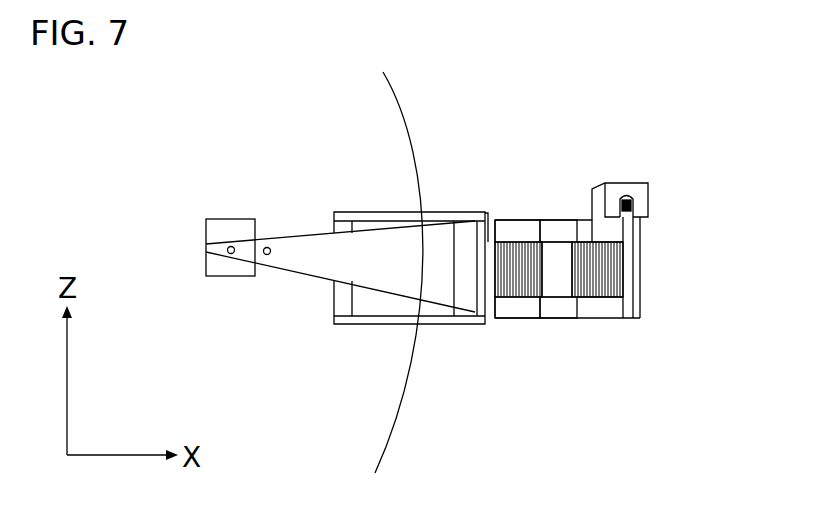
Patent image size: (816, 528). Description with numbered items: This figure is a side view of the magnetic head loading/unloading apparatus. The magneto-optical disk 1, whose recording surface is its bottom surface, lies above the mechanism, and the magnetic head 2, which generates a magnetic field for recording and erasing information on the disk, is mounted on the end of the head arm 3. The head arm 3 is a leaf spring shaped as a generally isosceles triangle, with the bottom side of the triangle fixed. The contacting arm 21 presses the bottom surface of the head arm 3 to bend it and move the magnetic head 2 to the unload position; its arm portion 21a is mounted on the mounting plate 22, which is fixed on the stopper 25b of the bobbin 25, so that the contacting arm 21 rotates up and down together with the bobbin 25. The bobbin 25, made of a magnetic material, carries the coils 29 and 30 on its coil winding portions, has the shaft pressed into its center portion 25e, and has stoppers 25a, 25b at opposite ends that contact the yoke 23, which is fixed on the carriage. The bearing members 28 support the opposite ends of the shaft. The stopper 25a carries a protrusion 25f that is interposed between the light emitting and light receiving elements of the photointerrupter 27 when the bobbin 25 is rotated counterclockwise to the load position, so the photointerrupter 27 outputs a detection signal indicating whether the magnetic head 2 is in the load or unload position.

The magneto-optical disk 1 is at (392, 128).
The magnetic head 2 is at (229, 221).
The head arm 3 is at (313, 246).
The contacting arm 21 is at (448, 326).
The arm portion 21a is at (338, 300).
The mounting plate 22 is at (478, 233).
The yoke 23 is at (518, 231).
The bobbin 25 is at (511, 297).
The stopper 25a is at (627, 273).
The stopper 25b is at (491, 243).
The center portion 25e is at (598, 292).
The protrusion 25f is at (640, 200).
The photointerrupter 27 is at (628, 185).
The bearing member 28 is at (555, 230).
The coil 29 is at (518, 285).
The coil 30 is at (560, 270).